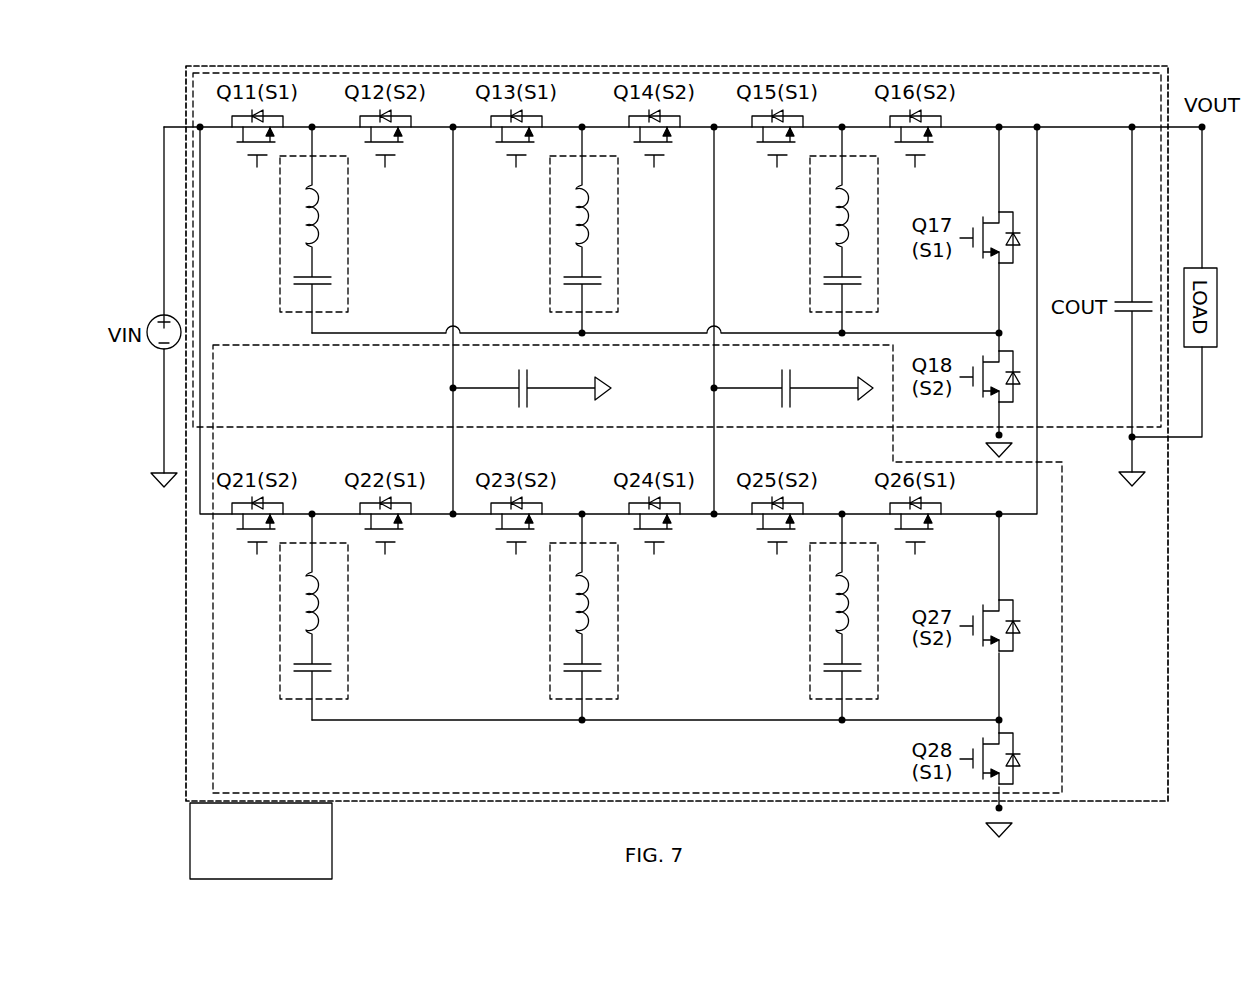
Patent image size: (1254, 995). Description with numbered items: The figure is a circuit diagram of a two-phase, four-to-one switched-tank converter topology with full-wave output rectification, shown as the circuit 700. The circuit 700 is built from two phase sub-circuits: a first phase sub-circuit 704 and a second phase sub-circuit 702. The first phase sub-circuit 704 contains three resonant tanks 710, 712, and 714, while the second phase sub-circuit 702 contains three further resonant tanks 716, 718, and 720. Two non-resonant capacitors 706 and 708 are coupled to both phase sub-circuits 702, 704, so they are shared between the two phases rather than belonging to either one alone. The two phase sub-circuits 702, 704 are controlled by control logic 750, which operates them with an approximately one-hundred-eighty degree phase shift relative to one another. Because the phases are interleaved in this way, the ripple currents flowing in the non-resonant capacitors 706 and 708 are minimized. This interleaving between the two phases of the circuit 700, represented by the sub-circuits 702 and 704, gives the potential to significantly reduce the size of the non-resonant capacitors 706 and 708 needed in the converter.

The circuit 700 is at (250, 66).
The second phase sub-circuit 702 is at (1063, 666).
The first phase sub-circuit 704 is at (193, 409).
The non-resonant capacitor 706 is at (530, 398).
The non-resonant capacitor 708 is at (793, 398).
The resonant tank 710 is at (348, 230).
The resonant tank 712 is at (618, 230).
The resonant tank 714 is at (878, 217).
The resonant tank 716 is at (348, 627).
The resonant tank 718 is at (618, 627).
The resonant tank 720 is at (878, 608).
The control logic 750 is at (243, 876).